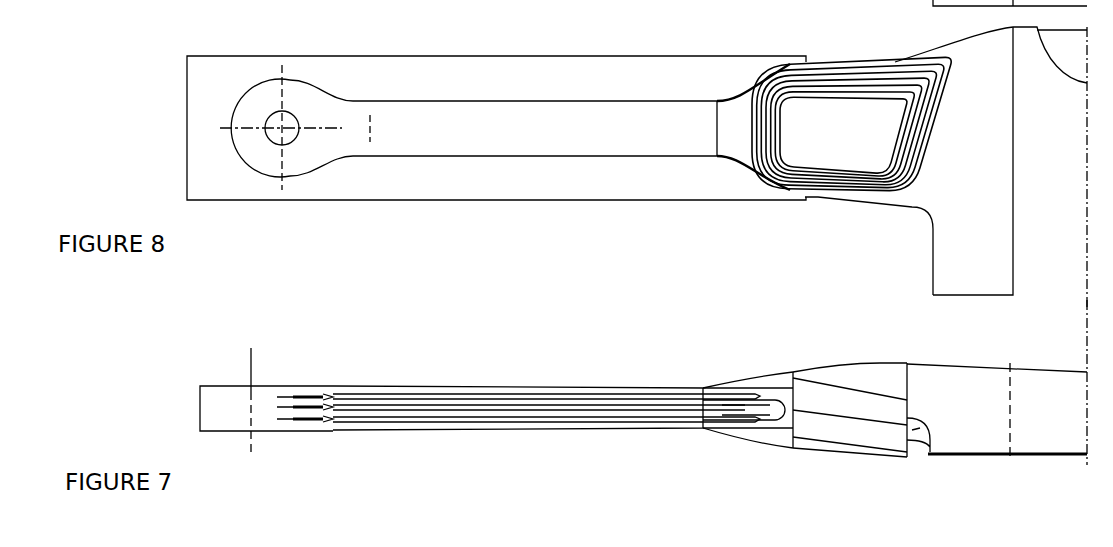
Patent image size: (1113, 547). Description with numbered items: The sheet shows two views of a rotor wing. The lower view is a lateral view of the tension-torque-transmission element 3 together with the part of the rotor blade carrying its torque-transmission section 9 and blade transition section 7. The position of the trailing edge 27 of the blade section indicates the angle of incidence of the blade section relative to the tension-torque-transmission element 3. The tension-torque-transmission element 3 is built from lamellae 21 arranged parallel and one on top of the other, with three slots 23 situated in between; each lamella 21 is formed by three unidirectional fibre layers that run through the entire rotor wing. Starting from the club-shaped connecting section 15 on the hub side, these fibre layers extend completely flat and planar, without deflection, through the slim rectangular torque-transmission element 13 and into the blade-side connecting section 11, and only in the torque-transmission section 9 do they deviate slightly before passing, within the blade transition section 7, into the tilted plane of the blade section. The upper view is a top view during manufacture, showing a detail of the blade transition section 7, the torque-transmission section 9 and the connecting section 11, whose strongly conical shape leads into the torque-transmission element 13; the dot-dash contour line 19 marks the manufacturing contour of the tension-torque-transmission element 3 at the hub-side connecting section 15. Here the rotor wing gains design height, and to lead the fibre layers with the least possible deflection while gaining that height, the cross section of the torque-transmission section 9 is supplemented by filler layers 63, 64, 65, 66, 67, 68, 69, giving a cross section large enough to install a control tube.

In FIG. 8, the tension-torque-transmission element 3 is at (557, 28).
In FIG. 7, the tension-torque-transmission element 3 is at (428, 340).
In FIG. 8, the blade transition section 7 is at (997, 0).
In FIG. 7, the blade transition section 7 is at (983, 378).
In FIG. 8, the torque-transmission section 9 is at (878, 135).
In FIG. 7, the torque-transmission section 9 is at (865, 378).
In FIG. 8, the blade-side connecting section 11 is at (731, 118).
In FIG. 8, the torque-transmission element 13 is at (452, 120).
In FIG. 7, the torque-transmission element 13 is at (365, 383).
In FIG. 7, the club-shaped connecting section 15 is at (213, 393).
In FIG. 8, the contour line 19 is at (280, 56).
In FIG. 7, the lamellae 21 is at (518, 390).
In FIG. 7, the slots 23 is at (588, 395).
In FIG. 7, the trailing edge 27 is at (970, 457).
In FIG. 8, the filler layer 63 is at (957, 70).
In FIG. 8, the filler layer 64 is at (956, 93).
In FIG. 8, the filler layer 65 is at (940, 137).
In FIG. 8, the filler layer 66 is at (920, 137).
In FIG. 8, the filler layer 67 is at (935, 168).
In FIG. 8, the filler layer 68 is at (913, 190).
In FIG. 8, the filler layer 69 is at (905, 198).